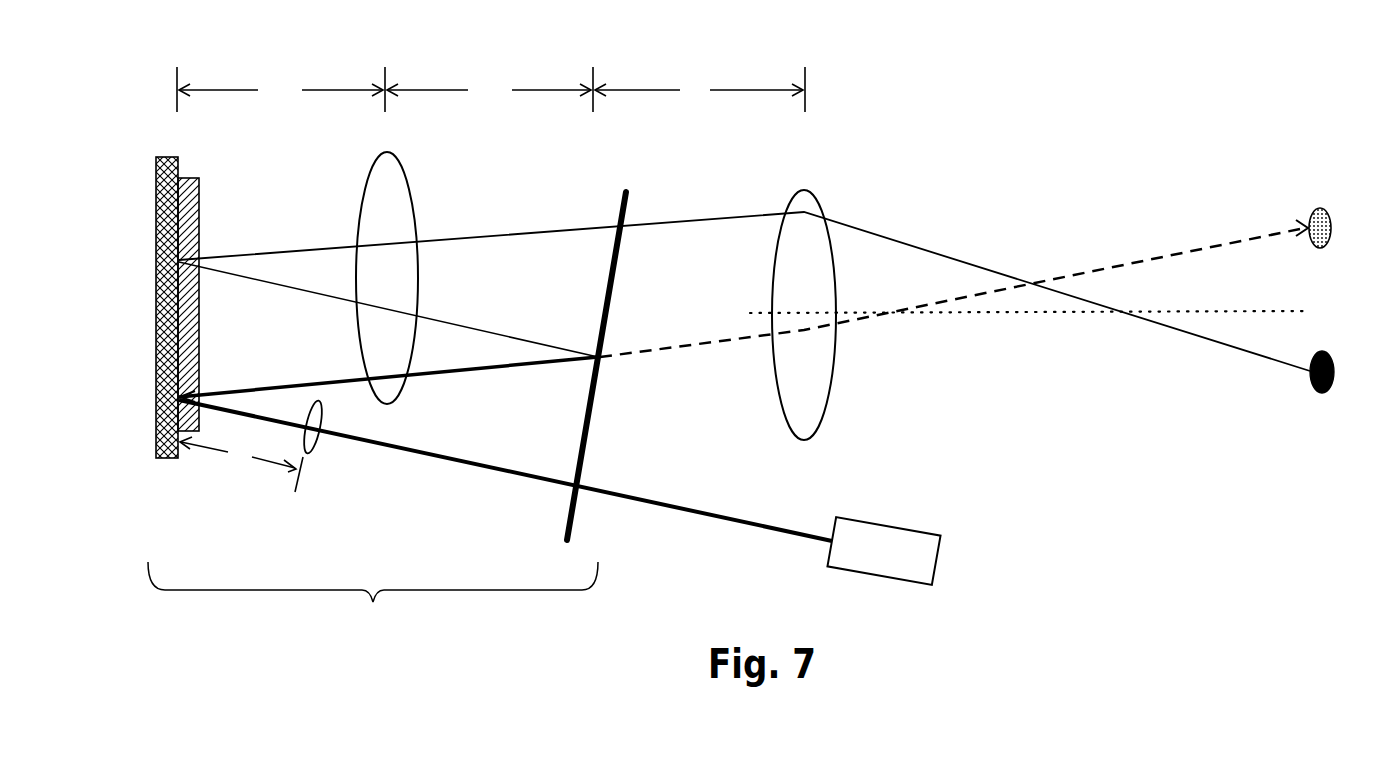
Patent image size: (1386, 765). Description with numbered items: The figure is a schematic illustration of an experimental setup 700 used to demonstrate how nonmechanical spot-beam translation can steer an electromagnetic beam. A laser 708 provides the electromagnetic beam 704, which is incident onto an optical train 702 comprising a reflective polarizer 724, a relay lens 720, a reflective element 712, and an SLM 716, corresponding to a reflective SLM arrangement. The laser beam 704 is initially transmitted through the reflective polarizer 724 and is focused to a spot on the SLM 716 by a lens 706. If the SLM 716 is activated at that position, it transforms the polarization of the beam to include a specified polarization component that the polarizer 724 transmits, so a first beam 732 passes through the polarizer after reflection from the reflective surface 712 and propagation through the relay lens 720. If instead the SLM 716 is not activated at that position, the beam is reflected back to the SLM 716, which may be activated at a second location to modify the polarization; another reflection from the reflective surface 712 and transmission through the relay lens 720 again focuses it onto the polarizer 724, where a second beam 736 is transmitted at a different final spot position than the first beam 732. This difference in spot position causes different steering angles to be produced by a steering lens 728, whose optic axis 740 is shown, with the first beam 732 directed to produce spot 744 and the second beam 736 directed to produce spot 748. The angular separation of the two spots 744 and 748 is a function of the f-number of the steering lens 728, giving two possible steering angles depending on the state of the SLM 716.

The optical system 700 is at (944, 96).
The optical train 702 is at (373, 600).
The electromagnetic beam 704 is at (690, 515).
The lens 706 is at (320, 452).
The laser 708 is at (935, 530).
The reflective element 712 is at (155, 178).
The SLM 716 is at (200, 230).
The relay lens 720 is at (400, 170).
The reflective polarizer 724 is at (630, 208).
The steering lens 728 is at (825, 212).
The first beam 732 is at (1168, 255).
The second beam 736 is at (1175, 340).
The optic axis 740 is at (1278, 308).
The spot 744 is at (1330, 214).
The spot 748 is at (1336, 362).